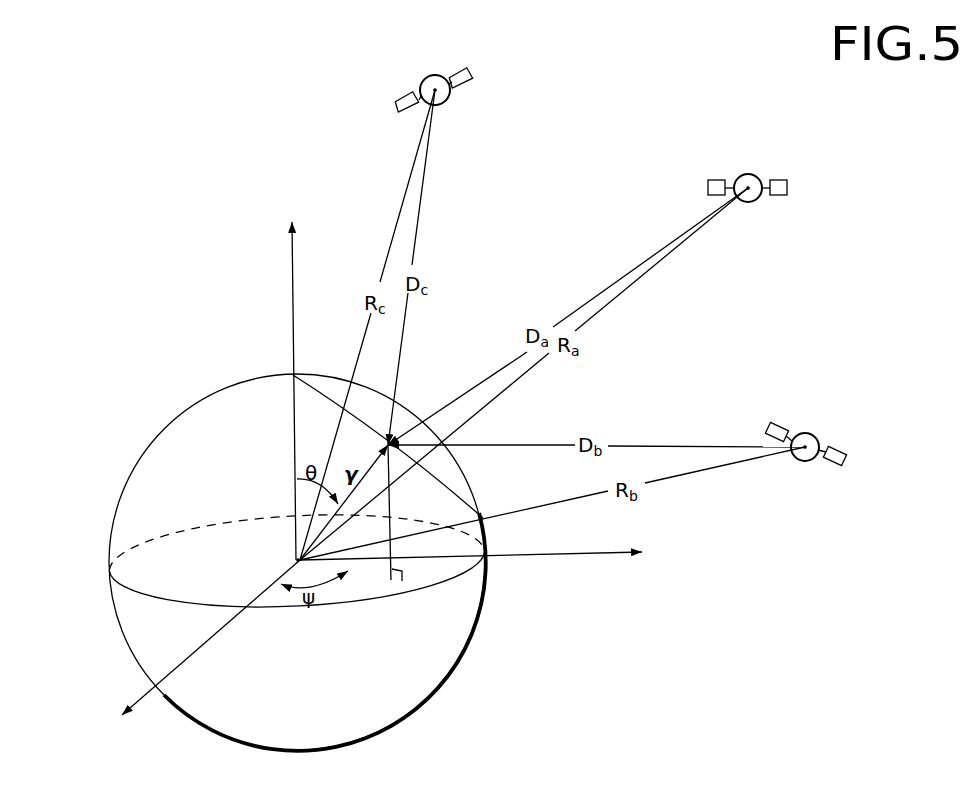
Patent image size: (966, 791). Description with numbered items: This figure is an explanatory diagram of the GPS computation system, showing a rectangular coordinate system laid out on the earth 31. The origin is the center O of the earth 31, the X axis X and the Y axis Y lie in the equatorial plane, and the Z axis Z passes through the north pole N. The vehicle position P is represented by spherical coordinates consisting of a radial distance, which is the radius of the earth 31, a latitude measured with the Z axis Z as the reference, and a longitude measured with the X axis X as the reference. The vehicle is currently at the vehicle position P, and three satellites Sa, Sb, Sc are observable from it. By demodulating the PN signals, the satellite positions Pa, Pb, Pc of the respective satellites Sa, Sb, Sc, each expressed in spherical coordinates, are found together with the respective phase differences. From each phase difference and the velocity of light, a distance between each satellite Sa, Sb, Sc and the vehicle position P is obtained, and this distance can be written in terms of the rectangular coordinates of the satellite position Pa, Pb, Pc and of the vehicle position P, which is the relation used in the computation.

The earth 31 is at (190, 406).
The satellite Sa is at (752, 202).
The satellite Sb is at (806, 461).
The satellite Sc is at (444, 101).
The satellite position Pa is at (785, 166).
The satellite position Pb is at (877, 423).
The satellite position Pc is at (491, 65).
The vehicle position P is at (300, 560).
The north pole N is at (294, 374).
The center of the earth O is at (288, 557).
The X axis X is at (203, 637).
The Y axis Y is at (471, 540).
The Z axis Z is at (301, 387).